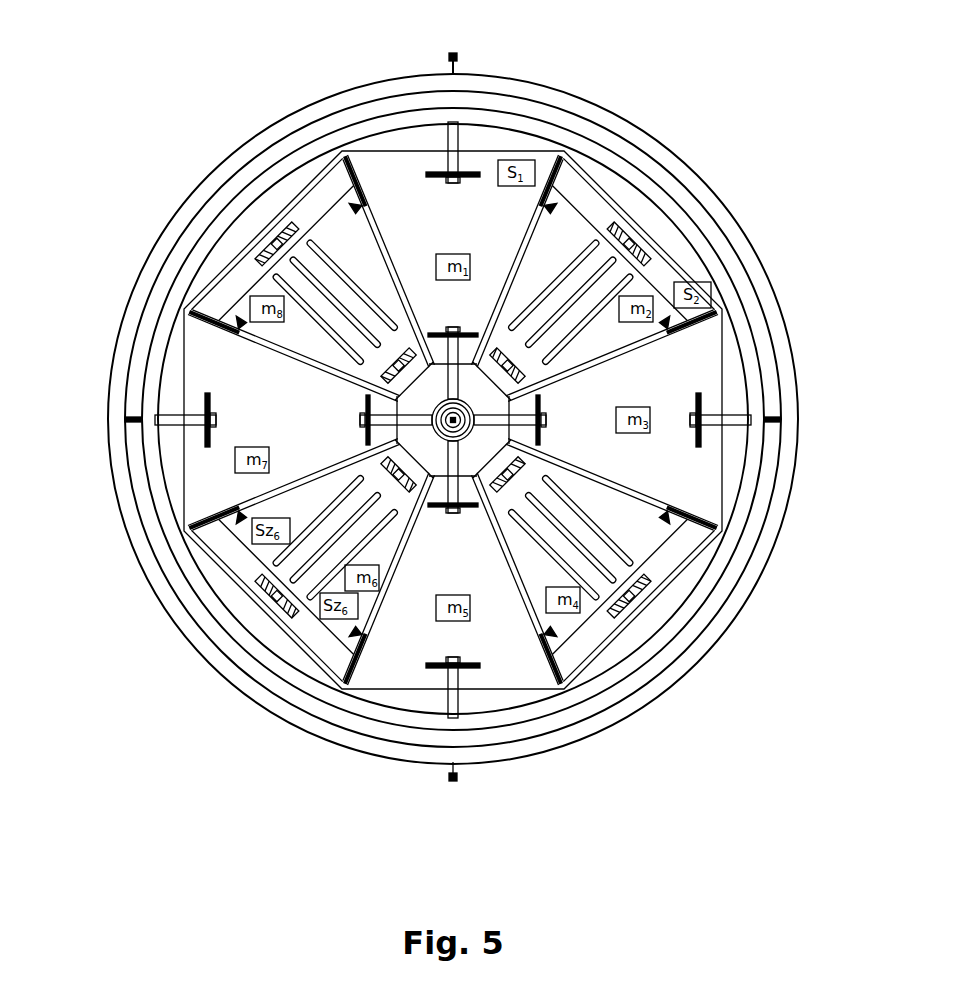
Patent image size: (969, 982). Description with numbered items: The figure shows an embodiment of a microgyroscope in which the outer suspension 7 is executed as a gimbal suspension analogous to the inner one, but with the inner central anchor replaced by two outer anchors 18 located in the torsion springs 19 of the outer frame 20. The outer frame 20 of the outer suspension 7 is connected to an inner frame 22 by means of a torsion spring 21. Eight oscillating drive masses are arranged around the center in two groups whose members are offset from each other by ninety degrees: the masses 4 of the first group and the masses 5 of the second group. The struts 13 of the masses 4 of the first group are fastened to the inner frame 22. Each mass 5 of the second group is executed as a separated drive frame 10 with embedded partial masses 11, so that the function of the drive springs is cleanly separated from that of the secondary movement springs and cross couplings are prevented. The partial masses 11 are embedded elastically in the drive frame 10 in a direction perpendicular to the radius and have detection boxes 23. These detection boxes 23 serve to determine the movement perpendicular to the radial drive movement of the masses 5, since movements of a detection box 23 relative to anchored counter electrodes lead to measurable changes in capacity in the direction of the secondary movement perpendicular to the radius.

The oscillating drive masses of the first group 4 is at (395, 668).
The oscillating drive masses of the second group 5 is at (590, 636).
The outer suspension 7 is at (231, 144).
The drive frame 10 is at (320, 640).
The partial masses 11 is at (267, 548).
The struts 13 is at (543, 410).
The outer anchors 18 is at (457, 53).
The torsion springs 19 is at (452, 71).
The outer frame 20 is at (647, 143).
The torsion spring 21 is at (128, 417).
The inner frame 22 is at (700, 242).
The detection boxes 23 is at (320, 596).